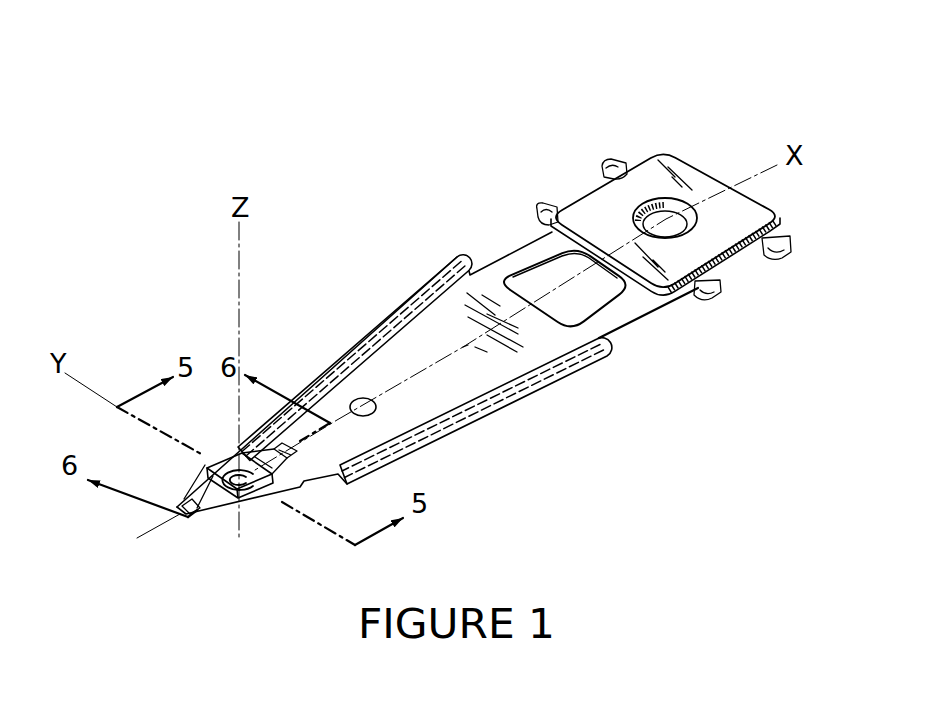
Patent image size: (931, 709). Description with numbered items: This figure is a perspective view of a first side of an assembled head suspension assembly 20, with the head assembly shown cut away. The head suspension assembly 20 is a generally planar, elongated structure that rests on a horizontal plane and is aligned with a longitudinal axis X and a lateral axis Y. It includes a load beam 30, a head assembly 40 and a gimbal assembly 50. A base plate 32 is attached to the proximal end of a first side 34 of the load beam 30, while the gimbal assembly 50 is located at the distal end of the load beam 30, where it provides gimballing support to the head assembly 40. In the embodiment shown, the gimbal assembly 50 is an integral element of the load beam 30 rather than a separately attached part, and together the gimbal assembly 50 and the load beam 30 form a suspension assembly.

The head suspension assembly 20 is at (485, 310).
The load beam 30 is at (540, 398).
The base plate 32 is at (707, 241).
The first side 34 is at (437, 404).
The head assembly 40 is at (227, 457).
The gimbal assembly 50 is at (252, 509).